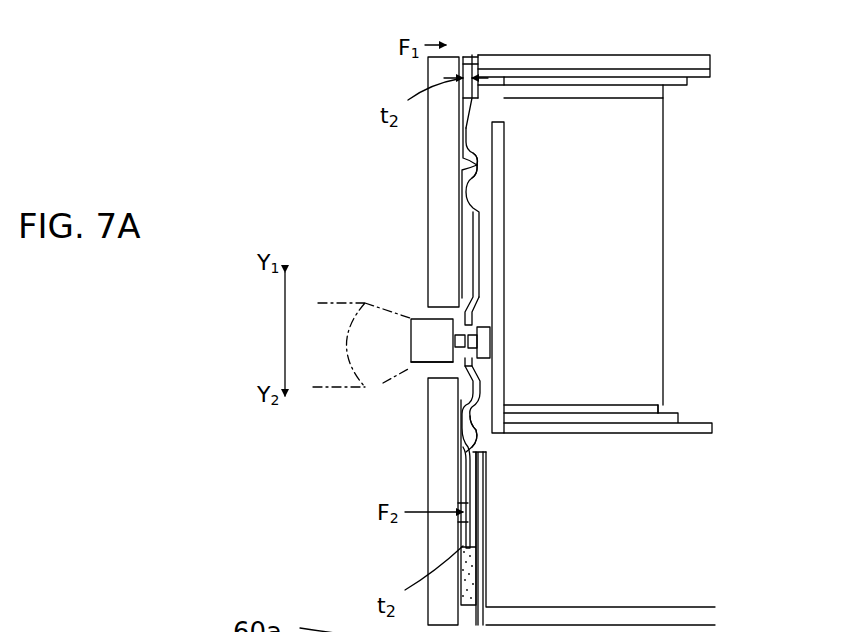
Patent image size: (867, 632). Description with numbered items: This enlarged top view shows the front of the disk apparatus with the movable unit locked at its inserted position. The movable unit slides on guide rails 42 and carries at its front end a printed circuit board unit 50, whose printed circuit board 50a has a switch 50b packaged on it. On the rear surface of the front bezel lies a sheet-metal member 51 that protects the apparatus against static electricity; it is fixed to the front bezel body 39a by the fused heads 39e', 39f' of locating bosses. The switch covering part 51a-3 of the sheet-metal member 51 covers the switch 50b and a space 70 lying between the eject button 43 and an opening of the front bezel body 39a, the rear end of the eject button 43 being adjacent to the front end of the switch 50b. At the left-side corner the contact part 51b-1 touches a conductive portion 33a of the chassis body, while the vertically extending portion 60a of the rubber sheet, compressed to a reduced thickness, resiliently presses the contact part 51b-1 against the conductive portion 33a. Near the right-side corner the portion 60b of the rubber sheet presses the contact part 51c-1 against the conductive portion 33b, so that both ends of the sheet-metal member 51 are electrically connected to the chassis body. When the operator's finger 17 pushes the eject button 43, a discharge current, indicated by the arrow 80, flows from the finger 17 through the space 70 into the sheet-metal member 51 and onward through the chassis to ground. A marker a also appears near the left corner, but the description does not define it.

The vertically extending portion 60a is at (467, 58).
The clip portion a is at (480, 56).
The contact part 51b-1 is at (480, 60).
The sheet-metal member 51 is at (484, 273).
The fused head of boss 39e' is at (529, 150).
The fused head of boss 39f' is at (516, 447).
The printed circuit board 50a is at (504, 195).
The printed circuit board unit 50 is at (514, 238).
The guide rails 42 is at (647, 57).
The conductive portion 33a is at (490, 82).
The switch covering part 51a-3 is at (480, 322).
The switch 50b is at (483, 342).
The space 70 is at (438, 318).
The arrow 80 is at (413, 313).
The finger 17 is at (346, 302).
The eject button 43 is at (423, 365).
The portion of rubber sheet 60b is at (460, 528).
The front bezel body 39a is at (446, 539).
The contact part 51c-1 is at (480, 528).
The conductive portion 33b is at (485, 548).